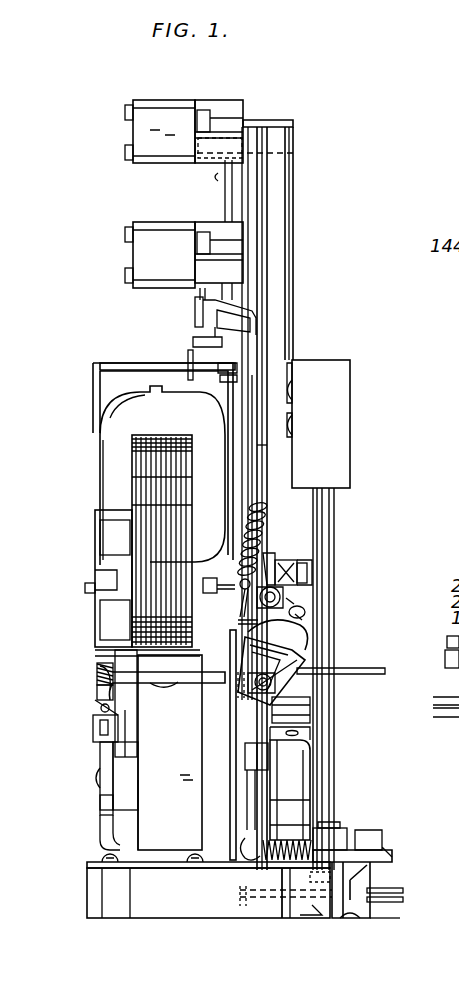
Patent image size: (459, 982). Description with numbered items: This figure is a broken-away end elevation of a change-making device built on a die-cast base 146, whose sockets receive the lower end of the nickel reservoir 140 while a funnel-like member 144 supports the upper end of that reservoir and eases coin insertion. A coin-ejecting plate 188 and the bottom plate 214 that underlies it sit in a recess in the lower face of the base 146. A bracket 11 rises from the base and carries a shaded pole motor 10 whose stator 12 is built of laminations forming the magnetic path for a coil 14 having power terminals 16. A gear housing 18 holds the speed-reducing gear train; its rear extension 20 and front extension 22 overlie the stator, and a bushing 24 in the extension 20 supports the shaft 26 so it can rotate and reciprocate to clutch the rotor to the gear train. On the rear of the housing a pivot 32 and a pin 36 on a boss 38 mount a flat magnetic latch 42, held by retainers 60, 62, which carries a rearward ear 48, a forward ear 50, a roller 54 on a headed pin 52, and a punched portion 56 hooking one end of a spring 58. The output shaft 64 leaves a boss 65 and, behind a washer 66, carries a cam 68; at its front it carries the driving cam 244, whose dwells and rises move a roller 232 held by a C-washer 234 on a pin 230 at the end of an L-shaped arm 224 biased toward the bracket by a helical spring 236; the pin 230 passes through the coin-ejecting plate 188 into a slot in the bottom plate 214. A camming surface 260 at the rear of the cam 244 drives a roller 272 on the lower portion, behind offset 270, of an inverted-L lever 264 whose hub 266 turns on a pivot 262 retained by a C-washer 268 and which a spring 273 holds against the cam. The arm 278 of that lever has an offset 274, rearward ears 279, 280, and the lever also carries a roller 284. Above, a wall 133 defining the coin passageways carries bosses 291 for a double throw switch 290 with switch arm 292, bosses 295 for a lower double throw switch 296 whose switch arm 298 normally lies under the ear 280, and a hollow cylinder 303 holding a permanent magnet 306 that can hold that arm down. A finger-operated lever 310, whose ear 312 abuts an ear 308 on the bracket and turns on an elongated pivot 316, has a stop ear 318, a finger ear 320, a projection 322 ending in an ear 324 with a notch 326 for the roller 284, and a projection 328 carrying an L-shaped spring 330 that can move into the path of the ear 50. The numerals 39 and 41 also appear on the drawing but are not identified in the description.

The motor 10 is at (168, 426).
The bracket 11 is at (93, 363).
The stator 12 is at (140, 505).
The coil 14 is at (104, 444).
The terminals 16 is at (143, 388).
The gear housing 18 is at (183, 794).
The extension 20 is at (94, 628).
The extension 22 is at (222, 644).
The bushing 24 is at (91, 577).
The shaft 26 is at (84, 590).
The pivot 32 is at (97, 675).
The pin 36 is at (100, 692).
The boss 38 is at (132, 714).
The connector 39 is at (218, 571).
The base plate 41 is at (180, 868).
The latch 42 is at (114, 703).
The ear 48 is at (95, 708).
The ear 50 is at (158, 678).
The headed pin 52 is at (93, 727).
The roller 54 is at (100, 745).
The portion 56 is at (98, 722).
The spring 58 is at (93, 709).
The retainer 60 is at (102, 662).
The retainer 62 is at (135, 683).
The output shaft 64 is at (98, 778).
The boss 65 is at (135, 788).
The washer 66 is at (110, 826).
The cam 68 is at (100, 800).
The wall 133 is at (252, 122).
The coin storage tube 140 is at (333, 528).
The funnel-like member 144 is at (347, 397).
The base 146 is at (170, 912).
The coin-ejecting plate 188 is at (404, 895).
The bottom plate 214 is at (405, 918).
The arm 224 is at (394, 857).
The pin 230 is at (340, 820).
The roller 232 is at (355, 834).
The C-washer 234 is at (347, 827).
The helical extension spring 236 is at (281, 870).
The driving cam 244 is at (305, 787).
The camming surface 260 is at (252, 815).
The pivot 262 is at (284, 596).
The lever 264 is at (257, 450).
The hub 266 is at (300, 553).
The C-washer 268 is at (310, 568).
The offset 270 is at (293, 637).
The roller 272 is at (245, 757).
The helical extension spring 273 is at (267, 543).
The offset 274 is at (240, 311).
The arm 278 is at (255, 322).
The ear 279 is at (193, 341).
The ear 280 is at (195, 312).
The roller 284 is at (297, 562).
The double throw switch 290 is at (162, 80).
The bosses 291 is at (222, 103).
The switch arm 292 is at (296, 153).
The bosses 295 is at (218, 228).
The double throw switch 296 is at (143, 225).
The switch arm 298 is at (198, 294).
The hollow cylinder 303 is at (238, 366).
The permanent magnet 306 is at (183, 359).
The ear 308 is at (280, 708).
The lever 310 is at (290, 677).
The ear 312 is at (269, 671).
The pivot 316 is at (231, 690).
The ear 318 is at (306, 613).
The ear 320 is at (383, 672).
The projection 322 is at (313, 622).
The ear 324 is at (315, 612).
The notch 326 is at (292, 610).
The projection 328 is at (297, 660).
The spring 330 is at (308, 616).